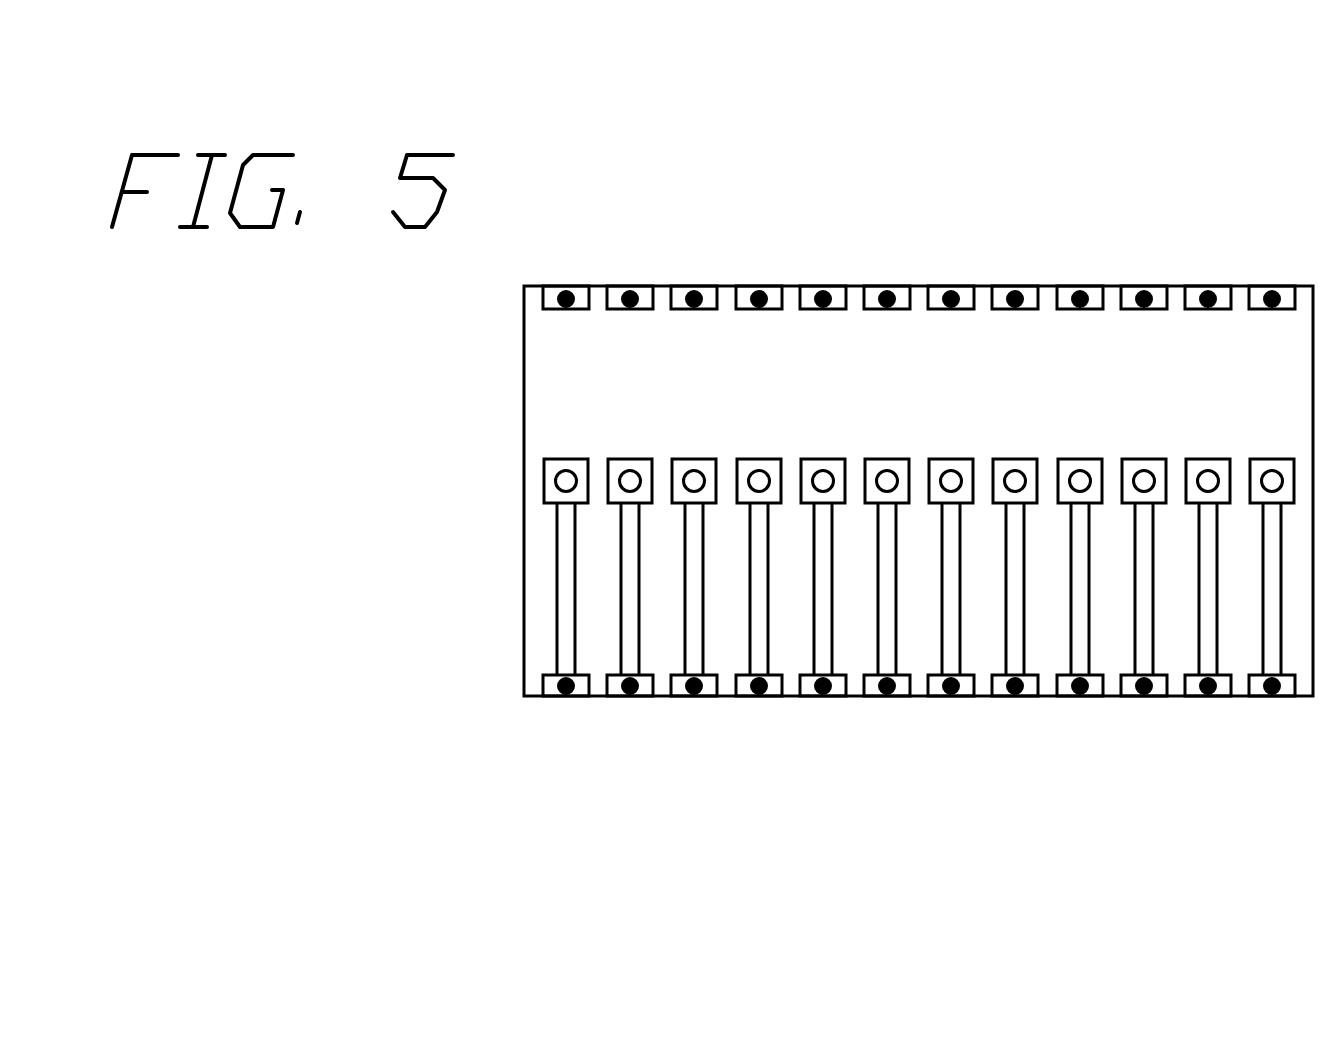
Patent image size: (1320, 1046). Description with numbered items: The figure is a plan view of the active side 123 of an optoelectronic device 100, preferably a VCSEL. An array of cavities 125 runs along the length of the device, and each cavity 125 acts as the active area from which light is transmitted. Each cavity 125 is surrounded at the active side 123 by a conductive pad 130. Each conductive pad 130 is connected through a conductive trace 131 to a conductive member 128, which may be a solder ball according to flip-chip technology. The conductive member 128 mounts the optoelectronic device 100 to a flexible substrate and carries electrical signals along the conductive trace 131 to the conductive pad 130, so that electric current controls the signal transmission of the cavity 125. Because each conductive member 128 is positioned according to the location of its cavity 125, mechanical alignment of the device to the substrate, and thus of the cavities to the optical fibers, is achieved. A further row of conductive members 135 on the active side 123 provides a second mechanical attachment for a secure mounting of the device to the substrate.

The optoelectronic device 100 is at (952, 142).
The active side 123 is at (592, 388).
The cavity 125 is at (565, 486).
The conductive member 128 is at (565, 688).
The conductive pad 130 is at (547, 463).
The conductive trace 131 is at (563, 641).
The conductive member 135 is at (565, 299).